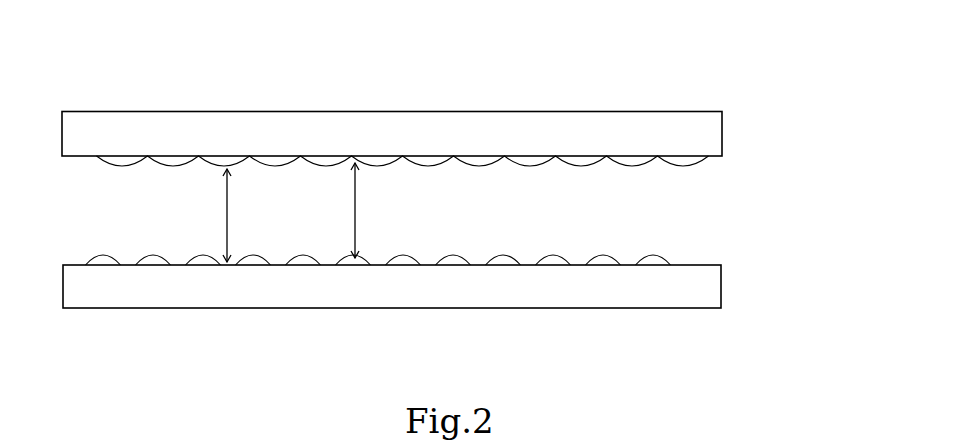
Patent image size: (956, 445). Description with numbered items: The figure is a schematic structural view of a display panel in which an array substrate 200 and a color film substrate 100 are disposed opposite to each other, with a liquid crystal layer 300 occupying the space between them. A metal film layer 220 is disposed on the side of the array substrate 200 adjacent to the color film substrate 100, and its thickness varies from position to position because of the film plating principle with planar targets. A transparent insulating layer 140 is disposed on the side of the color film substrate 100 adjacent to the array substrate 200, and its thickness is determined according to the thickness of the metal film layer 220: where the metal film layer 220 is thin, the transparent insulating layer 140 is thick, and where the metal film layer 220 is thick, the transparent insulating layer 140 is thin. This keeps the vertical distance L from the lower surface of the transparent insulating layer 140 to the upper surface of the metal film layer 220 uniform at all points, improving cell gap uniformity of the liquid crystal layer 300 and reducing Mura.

The color film substrate 100 is at (435, 148).
The transparent insulating layer 140 is at (528, 162).
The array substrate 200 is at (392, 289).
The metal film layer 220 is at (378, 242).
The liquid crystal layer 300 is at (435, 226).